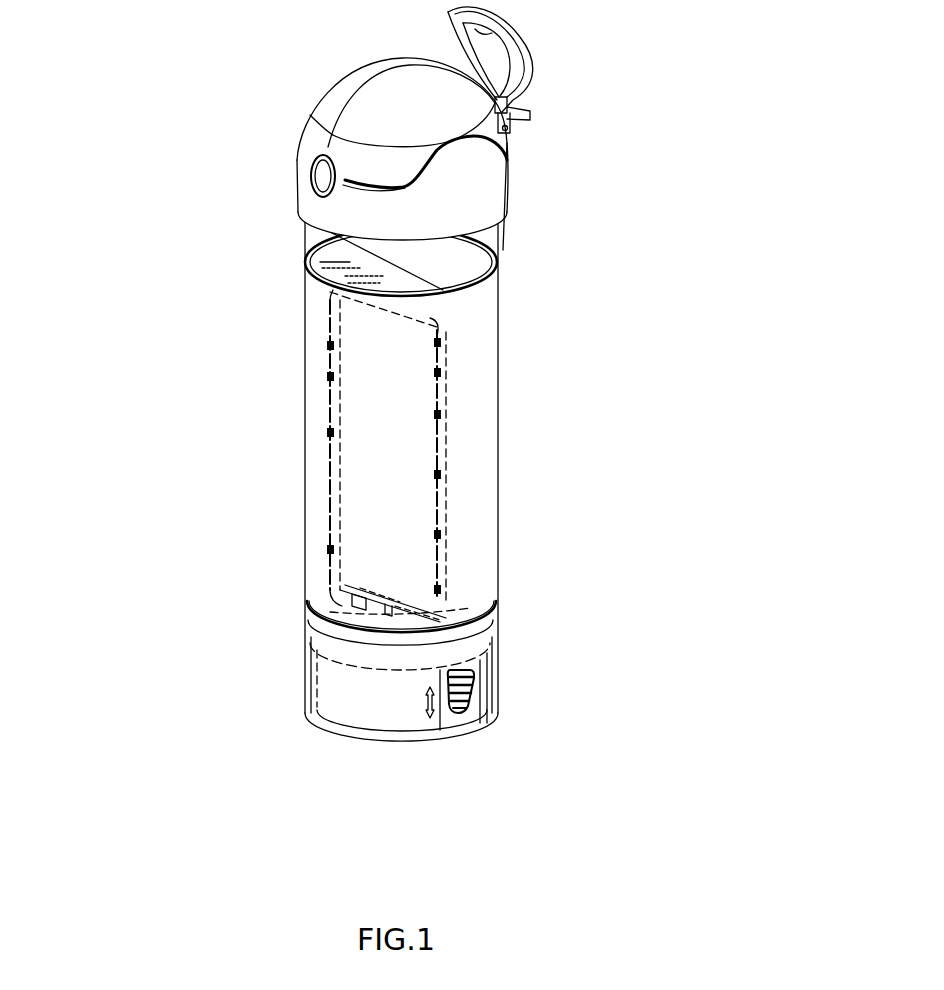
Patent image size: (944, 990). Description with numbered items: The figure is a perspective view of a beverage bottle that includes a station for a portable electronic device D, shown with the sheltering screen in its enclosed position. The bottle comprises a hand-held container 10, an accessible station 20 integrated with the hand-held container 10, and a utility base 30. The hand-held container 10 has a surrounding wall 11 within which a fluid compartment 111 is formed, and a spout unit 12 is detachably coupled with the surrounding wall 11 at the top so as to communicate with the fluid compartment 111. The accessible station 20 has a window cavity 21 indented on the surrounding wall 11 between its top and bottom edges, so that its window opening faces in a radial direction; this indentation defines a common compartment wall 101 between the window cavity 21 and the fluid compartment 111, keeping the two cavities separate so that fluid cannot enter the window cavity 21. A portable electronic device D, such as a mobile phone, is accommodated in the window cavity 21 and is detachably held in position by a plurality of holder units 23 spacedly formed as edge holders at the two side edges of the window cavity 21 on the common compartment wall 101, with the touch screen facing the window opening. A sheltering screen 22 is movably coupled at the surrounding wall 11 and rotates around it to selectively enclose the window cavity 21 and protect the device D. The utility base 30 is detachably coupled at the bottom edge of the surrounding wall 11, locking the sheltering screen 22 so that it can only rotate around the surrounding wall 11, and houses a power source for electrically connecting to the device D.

The hand-held container 10 is at (515, 173).
The surrounding wall 11 is at (500, 265).
The fluid compartment 111 is at (482, 246).
The spout unit 12 is at (475, 126).
The common compartment wall 101 is at (443, 312).
The accessible station 20 is at (325, 463).
The window cavity 21 is at (303, 360).
The sheltering screen 22 is at (320, 540).
The holder units 23 is at (333, 424).
The portable electronic device D is at (350, 513).
The utility base 30 is at (490, 667).